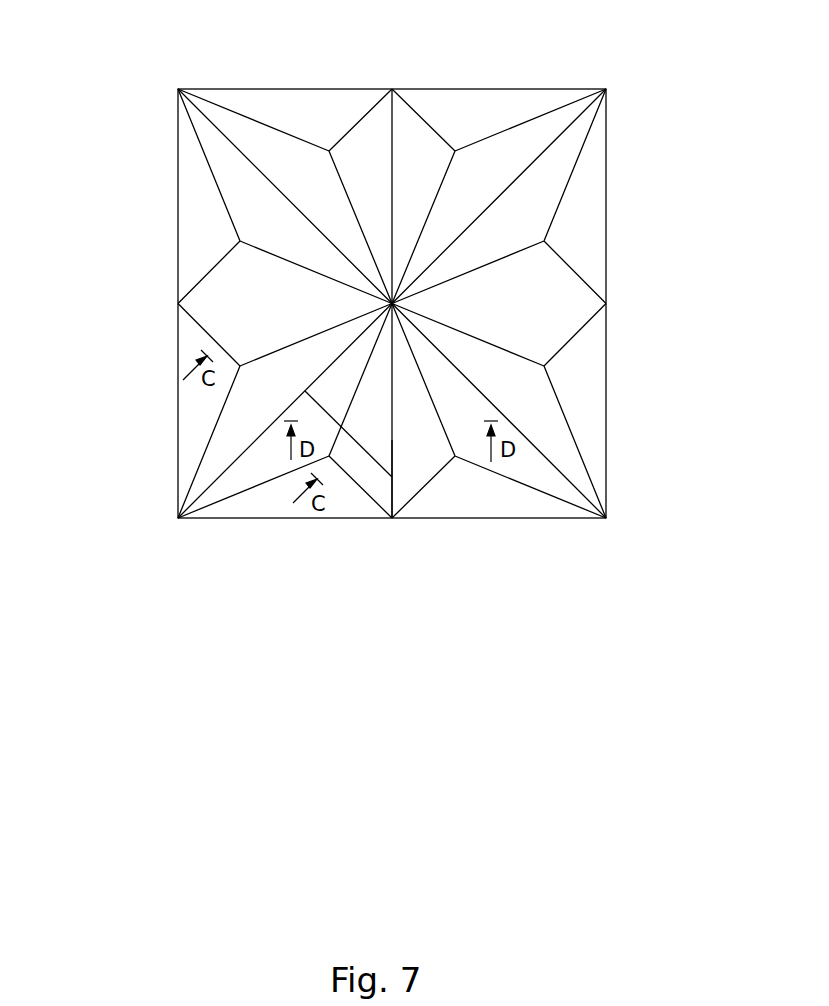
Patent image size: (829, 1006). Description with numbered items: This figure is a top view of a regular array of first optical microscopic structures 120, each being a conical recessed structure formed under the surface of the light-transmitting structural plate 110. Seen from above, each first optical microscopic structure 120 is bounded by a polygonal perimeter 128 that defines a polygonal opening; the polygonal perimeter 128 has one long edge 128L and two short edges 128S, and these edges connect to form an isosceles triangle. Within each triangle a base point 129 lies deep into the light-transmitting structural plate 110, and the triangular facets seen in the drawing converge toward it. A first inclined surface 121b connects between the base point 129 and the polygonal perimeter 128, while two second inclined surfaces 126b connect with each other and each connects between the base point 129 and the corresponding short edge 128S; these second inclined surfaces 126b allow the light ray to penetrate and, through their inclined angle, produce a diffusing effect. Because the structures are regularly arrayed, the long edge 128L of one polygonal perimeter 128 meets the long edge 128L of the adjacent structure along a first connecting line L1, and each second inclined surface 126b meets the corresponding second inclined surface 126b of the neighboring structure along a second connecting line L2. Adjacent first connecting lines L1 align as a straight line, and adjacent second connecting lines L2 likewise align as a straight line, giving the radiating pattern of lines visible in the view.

The light-transmitting structural plate 110 is at (283, 89).
The first optical microscopic structure 120 is at (187, 341).
The first inclined surface 121b is at (235, 424).
The second inclined surface 126b is at (245, 512).
The polygonal perimeter 128 is at (524, 508).
The short edge 128S is at (392, 452).
The long edge 128L is at (392, 477).
The base point 129 is at (333, 462).
The first connecting line L1 is at (532, 167).
The second connecting line L2 is at (396, 142).